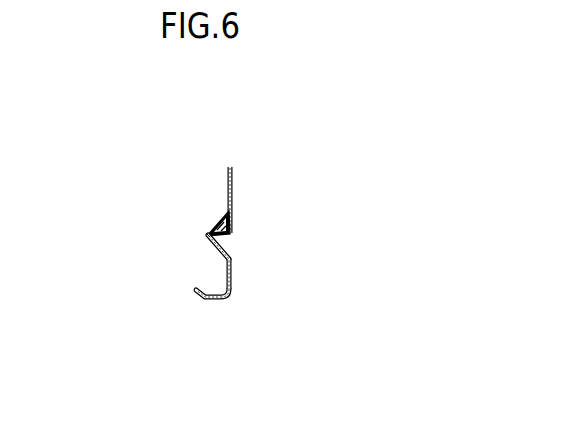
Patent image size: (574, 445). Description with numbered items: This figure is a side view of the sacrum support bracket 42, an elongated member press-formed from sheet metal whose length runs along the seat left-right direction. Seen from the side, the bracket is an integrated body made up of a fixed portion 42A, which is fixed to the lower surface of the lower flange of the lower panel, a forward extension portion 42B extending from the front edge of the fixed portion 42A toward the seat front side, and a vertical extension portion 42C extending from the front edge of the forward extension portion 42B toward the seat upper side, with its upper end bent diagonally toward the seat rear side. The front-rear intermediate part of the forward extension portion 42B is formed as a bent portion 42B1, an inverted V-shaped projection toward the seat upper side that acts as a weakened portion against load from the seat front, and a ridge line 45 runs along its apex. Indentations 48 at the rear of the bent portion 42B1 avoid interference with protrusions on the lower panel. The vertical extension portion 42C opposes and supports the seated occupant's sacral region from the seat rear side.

The sacrum support bracket 42 is at (273, 134).
The fixed portion 42A is at (233, 184).
The forward extension portion 42B is at (232, 273).
The bent portion 42B1 is at (222, 247).
The vertical extension portion 42C is at (212, 300).
The ridge line 45 is at (208, 236).
The indentations 48 is at (224, 220).